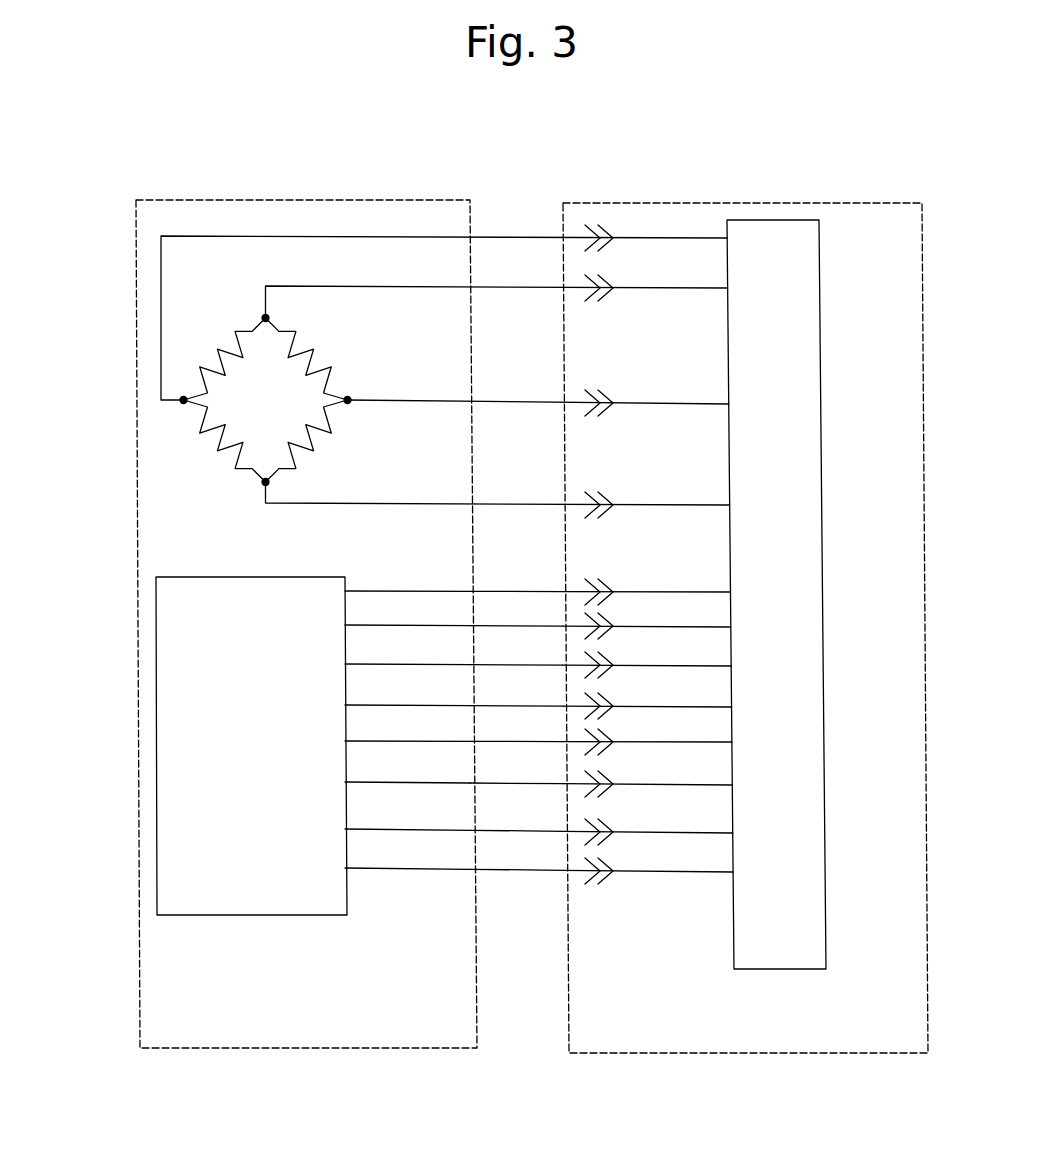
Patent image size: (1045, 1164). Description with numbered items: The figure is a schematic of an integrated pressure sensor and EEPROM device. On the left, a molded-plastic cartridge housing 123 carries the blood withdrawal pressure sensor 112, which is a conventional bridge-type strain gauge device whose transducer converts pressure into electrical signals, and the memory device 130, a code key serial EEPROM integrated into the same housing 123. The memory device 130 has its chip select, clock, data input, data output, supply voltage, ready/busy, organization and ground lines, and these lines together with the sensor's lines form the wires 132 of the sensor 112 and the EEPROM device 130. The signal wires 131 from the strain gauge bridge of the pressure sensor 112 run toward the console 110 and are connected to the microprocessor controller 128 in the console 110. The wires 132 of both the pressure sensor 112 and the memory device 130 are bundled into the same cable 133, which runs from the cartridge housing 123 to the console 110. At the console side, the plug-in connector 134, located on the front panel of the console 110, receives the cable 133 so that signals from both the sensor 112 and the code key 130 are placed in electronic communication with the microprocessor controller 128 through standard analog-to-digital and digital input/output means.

The console 110 is at (745, 605).
The blood withdrawal pressure sensor 112 is at (204, 408).
The cartridge housing 123 is at (306, 592).
The microprocessor controller 128 is at (825, 594).
The memory device 130 is at (251, 722).
The signal wires 131 is at (515, 227).
The wires 132 is at (366, 799).
The cable 133 is at (527, 893).
The plug-in connector 134 is at (648, 784).